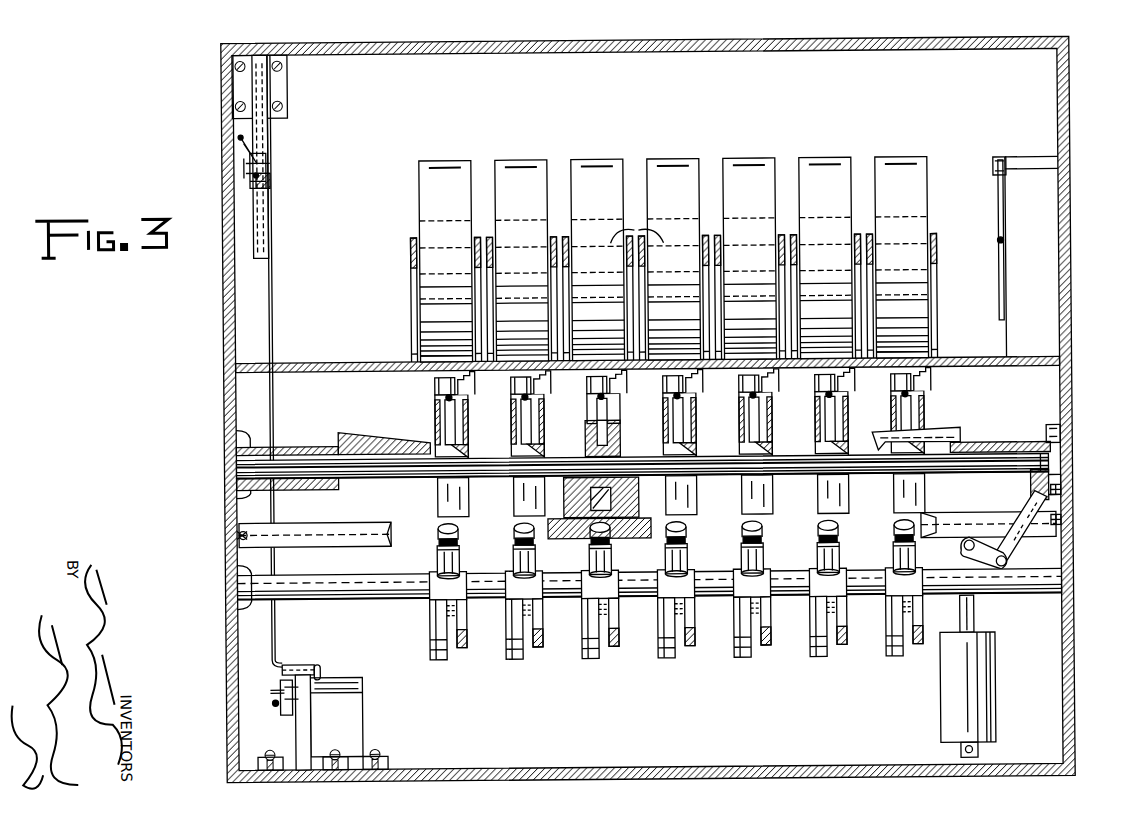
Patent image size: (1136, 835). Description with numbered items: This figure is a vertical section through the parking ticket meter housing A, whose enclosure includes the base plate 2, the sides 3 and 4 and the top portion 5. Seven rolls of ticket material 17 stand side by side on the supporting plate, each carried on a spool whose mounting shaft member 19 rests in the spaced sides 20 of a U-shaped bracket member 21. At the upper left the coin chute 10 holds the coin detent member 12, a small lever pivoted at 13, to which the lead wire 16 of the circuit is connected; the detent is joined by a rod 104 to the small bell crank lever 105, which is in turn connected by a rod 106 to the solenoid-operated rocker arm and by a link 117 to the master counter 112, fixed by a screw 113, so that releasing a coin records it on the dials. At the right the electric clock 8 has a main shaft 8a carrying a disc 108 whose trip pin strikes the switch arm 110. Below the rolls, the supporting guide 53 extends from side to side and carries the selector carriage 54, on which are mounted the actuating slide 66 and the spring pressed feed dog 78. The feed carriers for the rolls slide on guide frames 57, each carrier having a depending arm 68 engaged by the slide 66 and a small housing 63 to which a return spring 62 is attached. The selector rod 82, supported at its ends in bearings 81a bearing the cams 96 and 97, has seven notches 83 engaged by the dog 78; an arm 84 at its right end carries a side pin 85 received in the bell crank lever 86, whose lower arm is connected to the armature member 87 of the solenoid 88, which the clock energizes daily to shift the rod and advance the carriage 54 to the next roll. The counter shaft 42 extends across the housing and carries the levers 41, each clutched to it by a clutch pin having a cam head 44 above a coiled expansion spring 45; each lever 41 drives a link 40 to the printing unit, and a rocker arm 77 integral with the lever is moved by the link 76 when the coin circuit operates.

The bottom or base plate 2 is at (733, 791).
The side 3 is at (205, 641).
The side 4 is at (664, 409).
The top portion 5 is at (608, 67).
The housing A is at (669, 369).
The electric clock 8 is at (1031, 238).
The main shaft of the clock 8a is at (987, 250).
The coin chute 10 is at (271, 157).
The coin detent member 12 is at (282, 185).
The pivot 13 is at (244, 174).
The lead wire 16 is at (273, 135).
The roll of ticket material 17 is at (674, 246).
The mounting shaft member 19 is at (636, 220).
The spaced sides 20 is at (666, 290).
The U-shaped bracket member 21 is at (671, 333).
The link 40 is at (664, 646).
The lever 41 is at (658, 612).
The counter shaft 42 is at (649, 591).
The cam head 44 is at (656, 527).
The coiled expansion spring 45 is at (676, 546).
The supporting guide 53 is at (647, 528).
The selector carriage 54 is at (616, 497).
The guide frame 57 is at (695, 404).
The spring 62 is at (680, 421).
The small housing 63 is at (656, 391).
The actuating slide 66 is at (580, 500).
The depending arm 68 is at (681, 495).
The link 76 is at (690, 622).
The rocker arm 77 is at (680, 640).
The feed dog 78 is at (620, 438).
The bearings 81a is at (648, 434).
The selector rod 82 is at (642, 482).
The notches 83 is at (687, 439).
The arm 84 is at (1029, 484).
The side pin 85 is at (1075, 504).
The bell crank lever 86 is at (1004, 552).
The armature member 87 is at (980, 613).
The solenoid 88 is at (949, 695).
The cam 96 is at (384, 433).
The cam 97 is at (919, 420).
The rod 104 is at (290, 361).
The small bell crank lever 105 is at (281, 718).
The rod 106 is at (263, 718).
The disc 108 is at (985, 240).
The switch arm 110 is at (988, 149).
The master counter 112 is at (352, 723).
The screw 113 is at (337, 751).
The link 117 is at (269, 698).